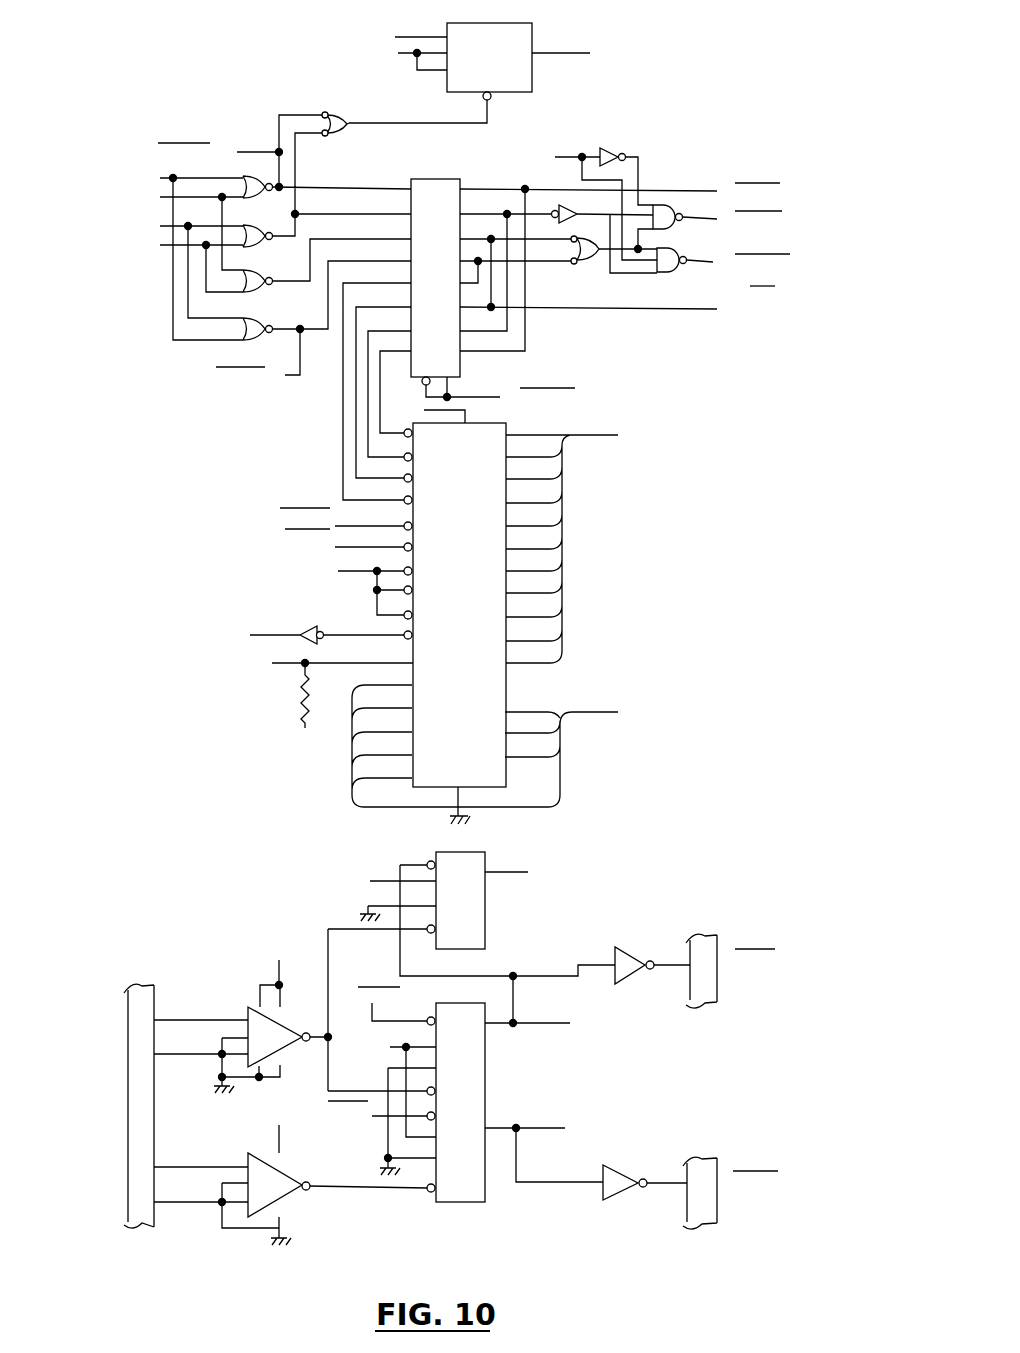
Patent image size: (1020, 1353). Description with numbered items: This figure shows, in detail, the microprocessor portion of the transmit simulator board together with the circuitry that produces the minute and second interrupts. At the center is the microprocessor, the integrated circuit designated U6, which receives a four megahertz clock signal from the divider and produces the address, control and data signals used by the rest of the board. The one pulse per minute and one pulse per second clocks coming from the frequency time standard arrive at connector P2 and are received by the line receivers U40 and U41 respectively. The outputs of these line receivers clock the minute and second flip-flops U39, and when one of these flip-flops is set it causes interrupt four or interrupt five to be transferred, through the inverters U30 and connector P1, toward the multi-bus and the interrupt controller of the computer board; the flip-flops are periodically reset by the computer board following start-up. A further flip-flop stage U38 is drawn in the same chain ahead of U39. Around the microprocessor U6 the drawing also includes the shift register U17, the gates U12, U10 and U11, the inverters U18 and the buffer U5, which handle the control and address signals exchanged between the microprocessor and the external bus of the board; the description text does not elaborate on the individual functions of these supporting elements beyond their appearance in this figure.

The LS164 shift register U17 is at (486, 62).
The LS02 NOR gates U12 is at (263, 249).
The LS00 NAND gates U10 is at (484, 182).
The LS241 buffer U5 is at (561, 339).
The LS04 inverters U18 is at (434, 385).
The LS10 NAND gates U11 is at (715, 224).
The microprocessor U6 is at (457, 622).
The LS107 flip-flop U38 is at (471, 929).
The minute and second flip-flops U39 is at (457, 1094).
The LS06 inverters U30 is at (637, 1082).
The connector P1 is at (730, 1071).
The connector P2 is at (109, 1092).
The line receiver U41 is at (243, 1011).
The line receiver U40 is at (239, 1178).